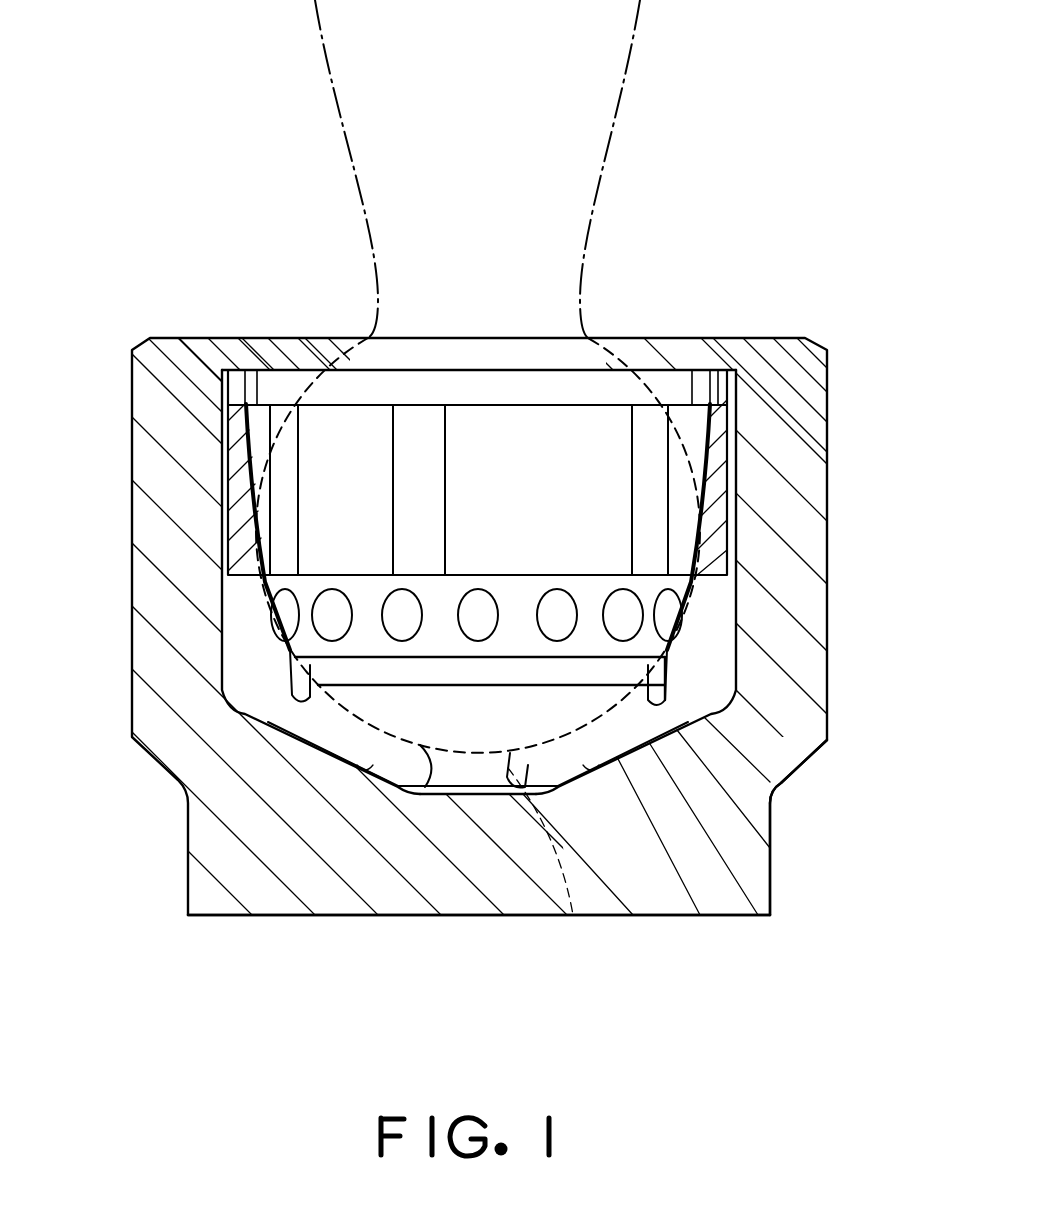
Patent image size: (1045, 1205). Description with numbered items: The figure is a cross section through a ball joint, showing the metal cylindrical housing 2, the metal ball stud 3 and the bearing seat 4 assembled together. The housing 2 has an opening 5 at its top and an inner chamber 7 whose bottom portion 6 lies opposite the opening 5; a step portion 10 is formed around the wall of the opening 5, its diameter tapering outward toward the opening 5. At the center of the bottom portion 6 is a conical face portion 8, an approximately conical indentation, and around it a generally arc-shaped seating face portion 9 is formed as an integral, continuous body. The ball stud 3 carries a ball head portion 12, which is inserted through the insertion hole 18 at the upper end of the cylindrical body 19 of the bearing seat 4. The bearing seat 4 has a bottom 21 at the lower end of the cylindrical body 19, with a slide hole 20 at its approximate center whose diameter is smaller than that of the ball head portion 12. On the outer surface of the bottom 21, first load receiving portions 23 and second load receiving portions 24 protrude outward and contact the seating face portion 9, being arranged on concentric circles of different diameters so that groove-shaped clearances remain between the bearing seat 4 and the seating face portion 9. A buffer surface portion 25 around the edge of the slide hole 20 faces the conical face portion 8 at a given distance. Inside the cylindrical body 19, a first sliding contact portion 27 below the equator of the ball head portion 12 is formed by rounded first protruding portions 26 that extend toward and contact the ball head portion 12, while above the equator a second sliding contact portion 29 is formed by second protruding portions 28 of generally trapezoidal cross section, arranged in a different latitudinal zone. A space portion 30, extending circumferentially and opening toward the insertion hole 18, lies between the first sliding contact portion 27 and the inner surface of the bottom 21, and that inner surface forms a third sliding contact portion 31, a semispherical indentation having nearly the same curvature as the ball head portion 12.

The housing 2 is at (840, 683).
The ball stud 3 is at (630, 60).
The bearing seat 4 is at (712, 648).
The opening 5 is at (730, 368).
The bottom portion 6 is at (490, 870).
The inner chamber 7 is at (478, 792).
The conical face portion 8 is at (457, 800).
The seating face portion 9 is at (300, 720).
The step portion 10 is at (230, 572).
The ball head portion 12 is at (574, 915).
The insertion hole 18 is at (248, 407).
The cylindrical body 19 is at (720, 477).
The slide hole 20 is at (520, 765).
The bottom 21 is at (373, 742).
The first load receiving portions 23 is at (360, 767).
The second load receiving portions 24 is at (778, 789).
The buffer surface portion 25 is at (410, 787).
The first protruding portions 26 is at (668, 622).
The first sliding contact portion 27 is at (697, 575).
The second protruding portions 28 is at (643, 453).
The second sliding contact portion 29 is at (700, 428).
The space portion 30 is at (720, 694).
The third sliding contact portion 31 is at (773, 840).